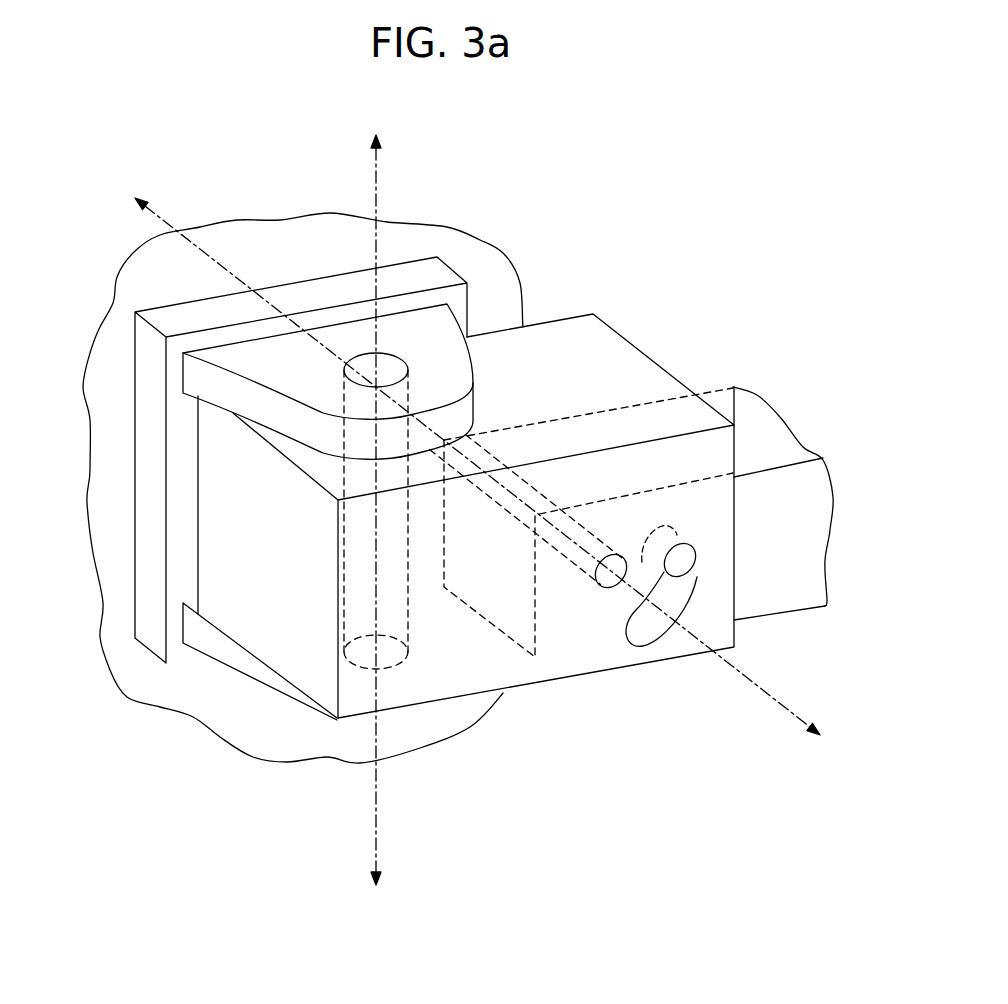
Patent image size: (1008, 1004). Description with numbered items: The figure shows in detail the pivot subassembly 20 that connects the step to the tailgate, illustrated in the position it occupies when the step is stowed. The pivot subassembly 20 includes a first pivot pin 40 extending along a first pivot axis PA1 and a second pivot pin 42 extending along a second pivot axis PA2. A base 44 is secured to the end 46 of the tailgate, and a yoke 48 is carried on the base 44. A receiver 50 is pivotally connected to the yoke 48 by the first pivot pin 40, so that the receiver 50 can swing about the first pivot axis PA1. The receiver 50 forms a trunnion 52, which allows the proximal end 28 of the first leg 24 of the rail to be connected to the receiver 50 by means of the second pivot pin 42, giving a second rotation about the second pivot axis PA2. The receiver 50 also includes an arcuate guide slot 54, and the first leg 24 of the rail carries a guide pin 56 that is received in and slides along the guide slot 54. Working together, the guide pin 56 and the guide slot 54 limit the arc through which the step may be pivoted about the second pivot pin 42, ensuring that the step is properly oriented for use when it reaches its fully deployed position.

The pivot subassembly 20 is at (662, 225).
The first leg 24 is at (787, 587).
The proximal end 28 is at (483, 530).
The first pivot pin 40 is at (388, 360).
The second pivot pin 42 is at (558, 552).
The base 44 is at (183, 527).
The end 46 is at (200, 690).
The yoke 48 is at (252, 360).
The receiver 50 is at (605, 362).
The trunnion 52 is at (593, 513).
The arcuate guide slot 54 is at (628, 645).
The guide pin 56 is at (683, 558).
The first pivot axis PA1 is at (377, 182).
The second pivot axis PA2 is at (155, 208).